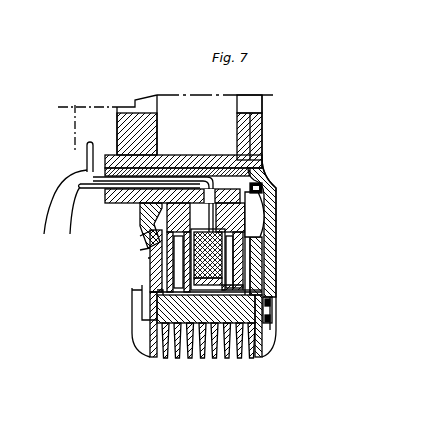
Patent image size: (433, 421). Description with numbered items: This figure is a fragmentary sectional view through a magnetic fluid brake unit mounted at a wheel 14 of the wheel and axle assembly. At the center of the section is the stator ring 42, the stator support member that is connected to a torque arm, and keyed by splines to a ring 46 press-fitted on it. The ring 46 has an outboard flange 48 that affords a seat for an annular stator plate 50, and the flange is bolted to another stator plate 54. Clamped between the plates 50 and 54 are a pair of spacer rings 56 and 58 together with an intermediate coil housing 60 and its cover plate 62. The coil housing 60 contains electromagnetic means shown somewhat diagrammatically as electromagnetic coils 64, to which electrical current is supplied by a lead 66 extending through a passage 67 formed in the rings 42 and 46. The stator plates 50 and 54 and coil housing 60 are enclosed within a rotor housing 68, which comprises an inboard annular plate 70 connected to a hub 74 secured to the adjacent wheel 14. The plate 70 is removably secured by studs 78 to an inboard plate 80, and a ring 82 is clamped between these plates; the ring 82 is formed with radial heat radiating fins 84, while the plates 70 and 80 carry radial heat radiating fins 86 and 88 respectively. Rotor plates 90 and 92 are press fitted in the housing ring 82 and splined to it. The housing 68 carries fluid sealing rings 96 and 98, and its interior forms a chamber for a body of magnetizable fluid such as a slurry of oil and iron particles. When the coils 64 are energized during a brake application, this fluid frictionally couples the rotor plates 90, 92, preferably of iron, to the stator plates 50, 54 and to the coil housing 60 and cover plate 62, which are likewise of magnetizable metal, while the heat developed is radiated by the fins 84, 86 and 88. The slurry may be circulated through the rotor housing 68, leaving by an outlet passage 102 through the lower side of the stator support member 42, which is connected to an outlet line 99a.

The wheel 14 is at (75, 125).
The stator ring 42 is at (263, 169).
The ring 46 is at (252, 203).
The outboard flange 48 is at (141, 254).
The annular stator plate 50 is at (178, 224).
The stator plate 54 is at (247, 222).
The spacer ring 56 is at (194, 202).
The spacer ring 58 is at (262, 249).
The coil housing 60 is at (163, 292).
The cover plate 62 is at (262, 263).
The electromagnetic coils 64 is at (176, 268).
The lead 66 is at (112, 230).
The passage 67 is at (157, 218).
The rotor housing 68 is at (186, 364).
The inboard annular plate 70 is at (276, 235).
The hub 74 is at (263, 134).
The studs 78 is at (272, 308).
The inboard plate 80 is at (152, 250).
The ring 82 is at (228, 312).
The radial heat radiating fins 84 is at (233, 363).
The radial heat radiating fins 86 is at (272, 343).
The radial heat radiating fins 88 is at (142, 342).
The rotor plate 90 is at (156, 276).
The rotor plate 92 is at (268, 287).
The fluid sealing ring 96 is at (130, 200).
The fluid sealing ring 98 is at (270, 190).
The outlet line 99a is at (52, 202).
The outlet passage 102 is at (148, 237).